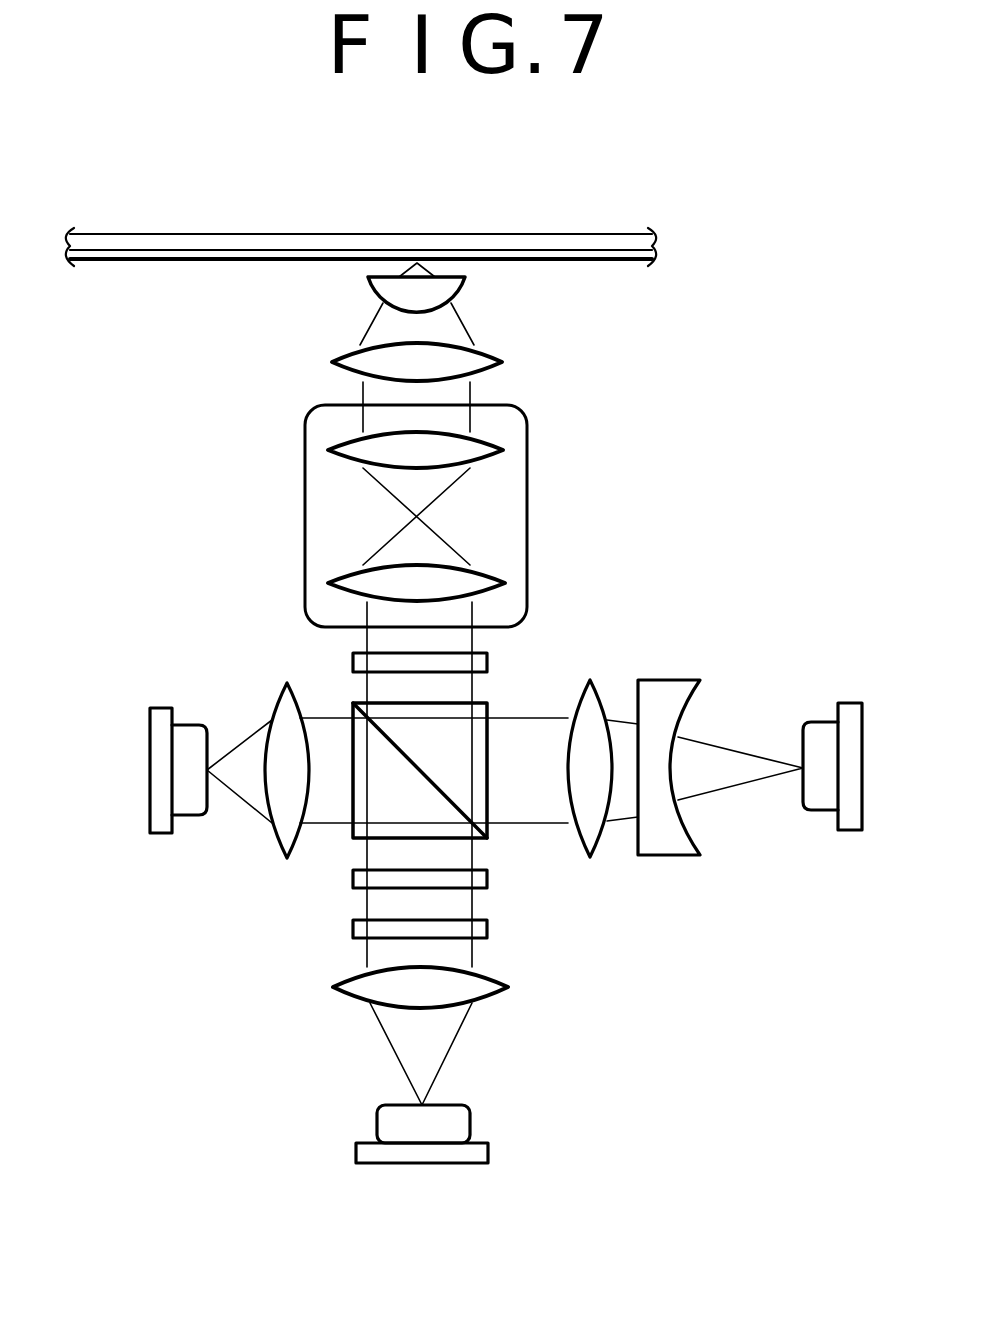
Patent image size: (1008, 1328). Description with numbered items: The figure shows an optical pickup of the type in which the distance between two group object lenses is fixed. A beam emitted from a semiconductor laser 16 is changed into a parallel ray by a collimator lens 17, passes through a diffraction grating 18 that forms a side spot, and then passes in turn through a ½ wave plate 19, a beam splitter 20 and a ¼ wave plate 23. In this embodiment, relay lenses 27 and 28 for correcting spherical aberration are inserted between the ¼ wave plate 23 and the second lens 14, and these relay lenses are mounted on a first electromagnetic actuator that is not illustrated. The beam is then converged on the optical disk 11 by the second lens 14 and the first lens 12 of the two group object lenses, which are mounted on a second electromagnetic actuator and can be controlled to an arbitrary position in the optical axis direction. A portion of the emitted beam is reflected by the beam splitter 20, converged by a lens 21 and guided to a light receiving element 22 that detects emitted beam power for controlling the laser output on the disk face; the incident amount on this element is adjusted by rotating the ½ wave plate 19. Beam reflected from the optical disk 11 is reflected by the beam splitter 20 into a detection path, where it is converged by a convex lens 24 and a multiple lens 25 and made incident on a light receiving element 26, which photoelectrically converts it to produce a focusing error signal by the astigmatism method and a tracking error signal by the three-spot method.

The optical disk 11 is at (484, 236).
The first lens 12 is at (360, 280).
The second lens 14 is at (505, 348).
The semiconductor laser 16 is at (470, 1125).
The collimator lens 17 is at (500, 990).
The diffraction grating 18 is at (490, 922).
The ½ wave plate 19 is at (350, 880).
The beam splitter 20 is at (487, 833).
The lens 21 is at (278, 838).
The light receiving element for detecting emitted beam power 22 is at (190, 725).
The ¼ wave plate 23 is at (350, 662).
The convex lens 24 is at (590, 680).
The multiple lens 25 is at (680, 680).
The light receiving element for detecting a servo error signal 26 is at (825, 722).
The relay lens 27 is at (487, 573).
The relay lens 28 is at (487, 440).